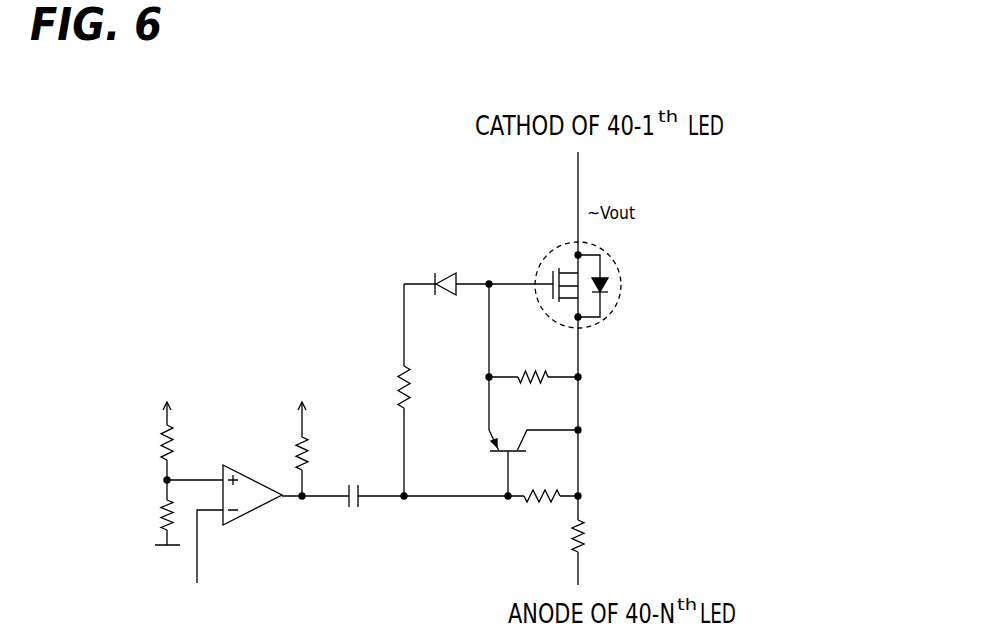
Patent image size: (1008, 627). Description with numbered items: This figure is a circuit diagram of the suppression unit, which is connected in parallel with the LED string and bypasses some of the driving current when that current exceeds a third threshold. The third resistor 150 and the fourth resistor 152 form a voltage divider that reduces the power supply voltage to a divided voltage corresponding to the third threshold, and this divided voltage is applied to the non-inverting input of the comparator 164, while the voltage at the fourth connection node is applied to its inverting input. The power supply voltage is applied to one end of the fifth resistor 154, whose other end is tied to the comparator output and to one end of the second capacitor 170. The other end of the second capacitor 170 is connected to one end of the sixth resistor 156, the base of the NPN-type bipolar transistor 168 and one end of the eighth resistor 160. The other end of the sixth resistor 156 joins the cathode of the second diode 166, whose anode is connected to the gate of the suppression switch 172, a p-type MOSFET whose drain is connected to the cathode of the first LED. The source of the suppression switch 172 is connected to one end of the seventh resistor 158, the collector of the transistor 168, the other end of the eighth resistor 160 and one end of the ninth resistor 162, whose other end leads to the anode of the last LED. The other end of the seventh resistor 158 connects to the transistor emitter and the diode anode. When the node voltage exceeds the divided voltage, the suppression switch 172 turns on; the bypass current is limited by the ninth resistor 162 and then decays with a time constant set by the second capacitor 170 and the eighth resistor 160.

The third resistor 150 is at (158, 440).
The fourth resistor 152 is at (158, 512).
The fifth resistor 154 is at (306, 456).
The sixth resistor 156 is at (412, 388).
The seventh resistor 158 is at (538, 366).
The eighth resistor 160 is at (541, 505).
The ninth resistor 162 is at (588, 541).
The comparator 164 is at (253, 465).
The second diode 166 is at (444, 272).
The NPN-type bipolar transistor 168 is at (482, 445).
The second capacitor 170 is at (350, 512).
The suppression switch 172 is at (620, 272).